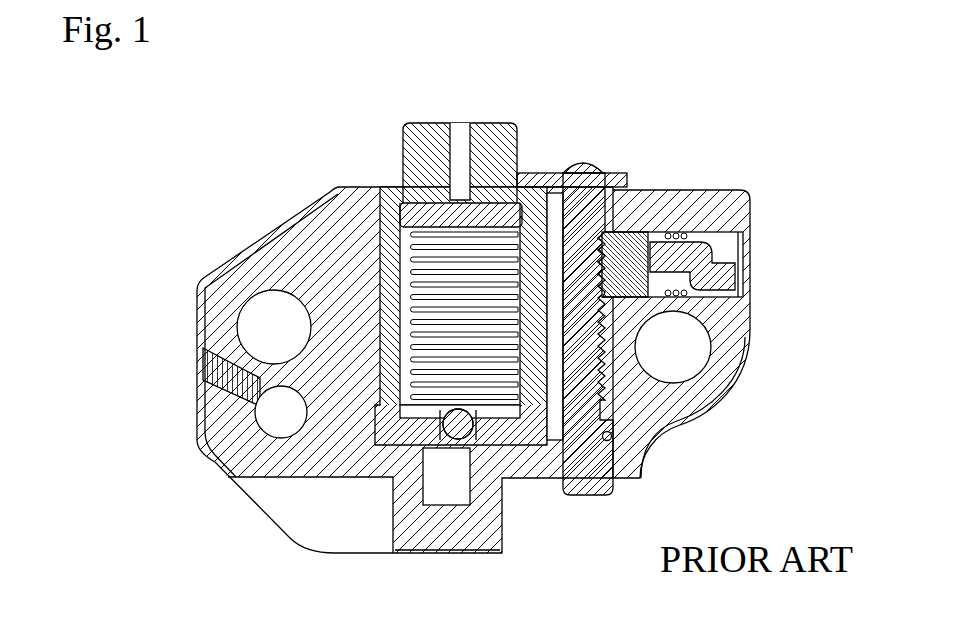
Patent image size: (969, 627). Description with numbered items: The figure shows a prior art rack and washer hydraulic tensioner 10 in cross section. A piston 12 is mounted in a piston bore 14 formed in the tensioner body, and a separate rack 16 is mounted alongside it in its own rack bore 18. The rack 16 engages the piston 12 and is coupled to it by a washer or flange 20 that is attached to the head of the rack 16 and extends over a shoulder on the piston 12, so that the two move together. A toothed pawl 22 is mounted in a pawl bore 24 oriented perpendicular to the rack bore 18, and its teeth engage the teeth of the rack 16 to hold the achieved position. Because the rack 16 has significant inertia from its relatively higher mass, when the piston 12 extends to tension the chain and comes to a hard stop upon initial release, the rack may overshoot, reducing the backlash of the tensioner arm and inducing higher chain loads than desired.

The rack and washer hydraulic tensioner 10 is at (705, 98).
The piston 12 is at (415, 148).
The piston bore 14 is at (375, 290).
The rack 16 is at (590, 177).
The rack bore 18 is at (613, 395).
The washer or flange 20 is at (548, 177).
The pawl 22 is at (627, 270).
The pawl bore 24 is at (750, 337).